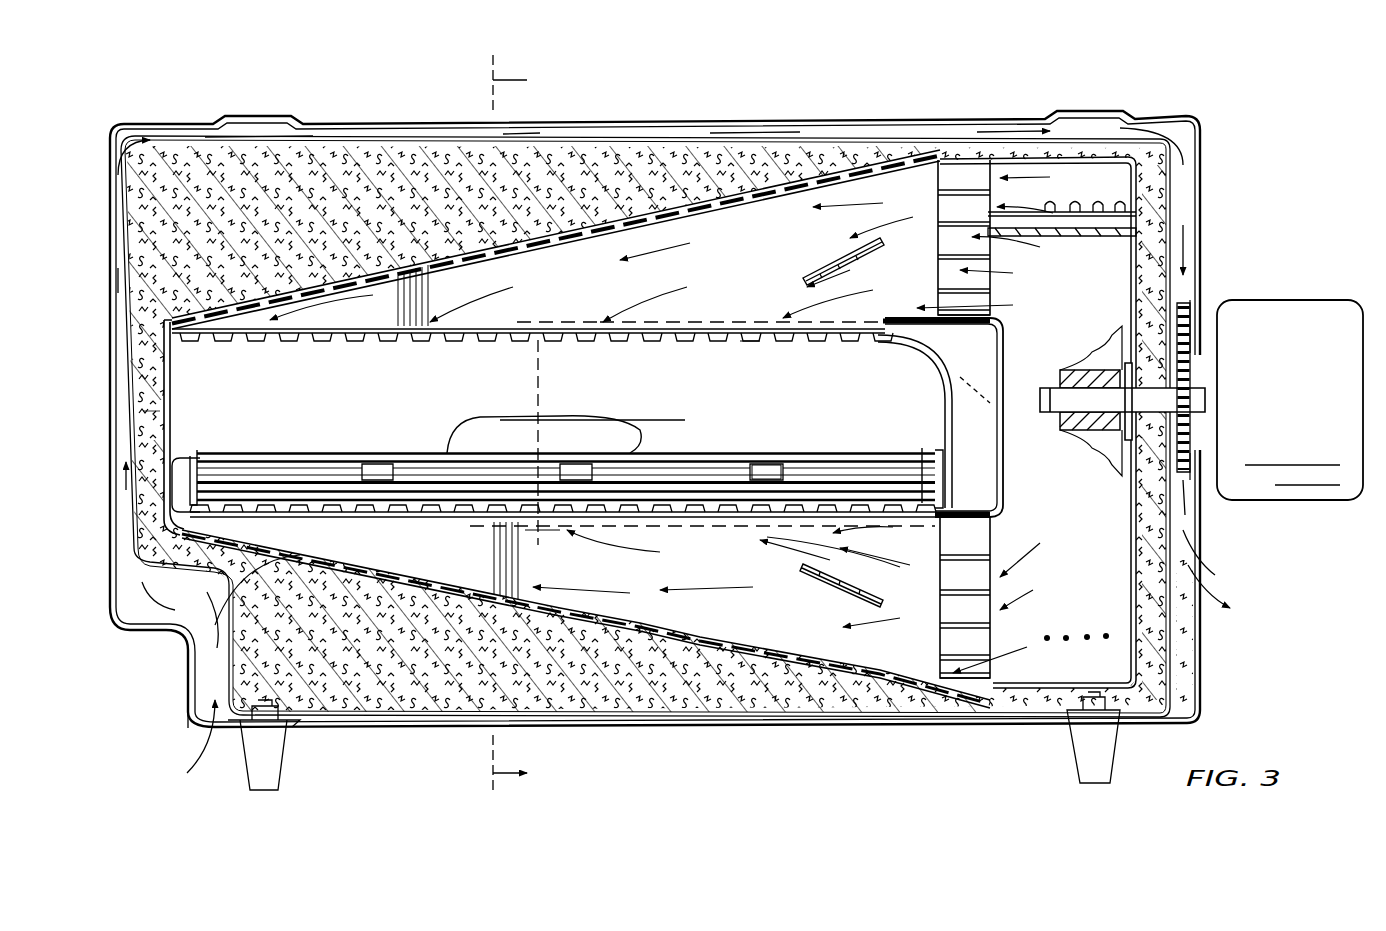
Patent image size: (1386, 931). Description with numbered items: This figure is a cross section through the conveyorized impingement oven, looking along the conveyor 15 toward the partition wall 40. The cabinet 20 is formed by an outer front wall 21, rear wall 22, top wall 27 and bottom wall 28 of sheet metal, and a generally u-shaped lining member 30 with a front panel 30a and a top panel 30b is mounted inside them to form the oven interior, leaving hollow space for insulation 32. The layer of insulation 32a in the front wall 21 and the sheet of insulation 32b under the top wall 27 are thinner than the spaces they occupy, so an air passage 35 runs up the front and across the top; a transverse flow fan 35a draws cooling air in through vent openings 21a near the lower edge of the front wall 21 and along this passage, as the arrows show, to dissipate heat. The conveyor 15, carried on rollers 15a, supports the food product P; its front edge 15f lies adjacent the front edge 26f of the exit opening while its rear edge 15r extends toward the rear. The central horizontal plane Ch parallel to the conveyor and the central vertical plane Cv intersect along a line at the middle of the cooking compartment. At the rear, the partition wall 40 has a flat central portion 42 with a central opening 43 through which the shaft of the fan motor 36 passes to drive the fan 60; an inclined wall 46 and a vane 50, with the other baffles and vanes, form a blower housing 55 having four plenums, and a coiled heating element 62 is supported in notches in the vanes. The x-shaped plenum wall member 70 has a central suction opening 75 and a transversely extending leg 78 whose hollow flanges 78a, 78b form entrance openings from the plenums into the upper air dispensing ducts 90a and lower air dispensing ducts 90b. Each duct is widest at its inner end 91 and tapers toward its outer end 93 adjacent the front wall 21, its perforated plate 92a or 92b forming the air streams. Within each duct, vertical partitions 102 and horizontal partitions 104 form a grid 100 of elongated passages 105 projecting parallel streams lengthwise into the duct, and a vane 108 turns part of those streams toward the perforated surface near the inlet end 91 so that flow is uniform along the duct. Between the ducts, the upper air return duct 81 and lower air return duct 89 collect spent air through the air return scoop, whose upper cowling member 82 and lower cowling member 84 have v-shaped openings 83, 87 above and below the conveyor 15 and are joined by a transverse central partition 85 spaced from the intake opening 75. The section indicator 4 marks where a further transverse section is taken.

The section line 4- 4 is at (495, 433).
The conveyor 15 is at (402, 452).
The rollers 15a is at (310, 478).
The front edge of conveyor 15f is at (192, 452).
The rear edge of conveyor 15r is at (922, 450).
The cabinet 20 is at (468, 121).
The front wall 21 is at (110, 298).
The vent openings 21a is at (205, 740).
The rear wall 22 is at (1203, 171).
The front edge of exit opening 26f is at (133, 377).
The top wall 27 is at (752, 122).
The bottom wall 28 is at (650, 727).
The lining member 30 is at (623, 208).
The front panel of oven liner 30a is at (166, 373).
The top panel of liner 30b is at (506, 252).
The insulation 32 is at (420, 703).
The layer of insulation 32a is at (143, 411).
The sheet of insulation 32b is at (375, 165).
The air passage 35 is at (568, 133).
The transverse flow fan 35a is at (1186, 335).
The fan motor 36 is at (1268, 337).
The partition wall 40 is at (1203, 716).
The central portion 42 is at (1177, 218).
The central opening 43 is at (1187, 410).
The inclined wall 46 is at (1060, 214).
The vane 50 is at (1063, 226).
The blower housing 55 is at (1182, 300).
The fan 60 is at (1092, 368).
The heating element 62 is at (1088, 636).
The plenum wall member 70 is at (1008, 452).
The central opening 75 is at (993, 407).
The transversely extending leg 78 is at (1003, 352).
The hollow flange 78a is at (888, 333).
The hollow flange 78b is at (1005, 535).
The upper air return duct 81 is at (735, 342).
The upper cowling member 82 is at (698, 318).
The v-shaped opening 83 is at (575, 325).
The lower cowling member 84 is at (675, 527).
The central partition 85 is at (940, 430).
The v-shaped opening 87 is at (543, 530).
The lower air return duct 89 is at (792, 458).
The upper air dispensing ducts 90a is at (396, 348).
The lower air dispensing ducts 90b is at (845, 503).
The inner end of duct 91 is at (923, 668).
The perforated plate 92a is at (764, 333).
The perforated plate 92b is at (333, 517).
The outer end of duct 93 is at (216, 520).
The grid 100 is at (936, 212).
The vertical partitions 102 is at (968, 612).
The horizontal partitions 104 is at (963, 633).
The elongated passages 105 is at (957, 243).
The vane 108 is at (840, 258).
The food product P is at (585, 425).
The central horizontal plane Ch is at (645, 420).
The central vertical plane Cv is at (540, 380).